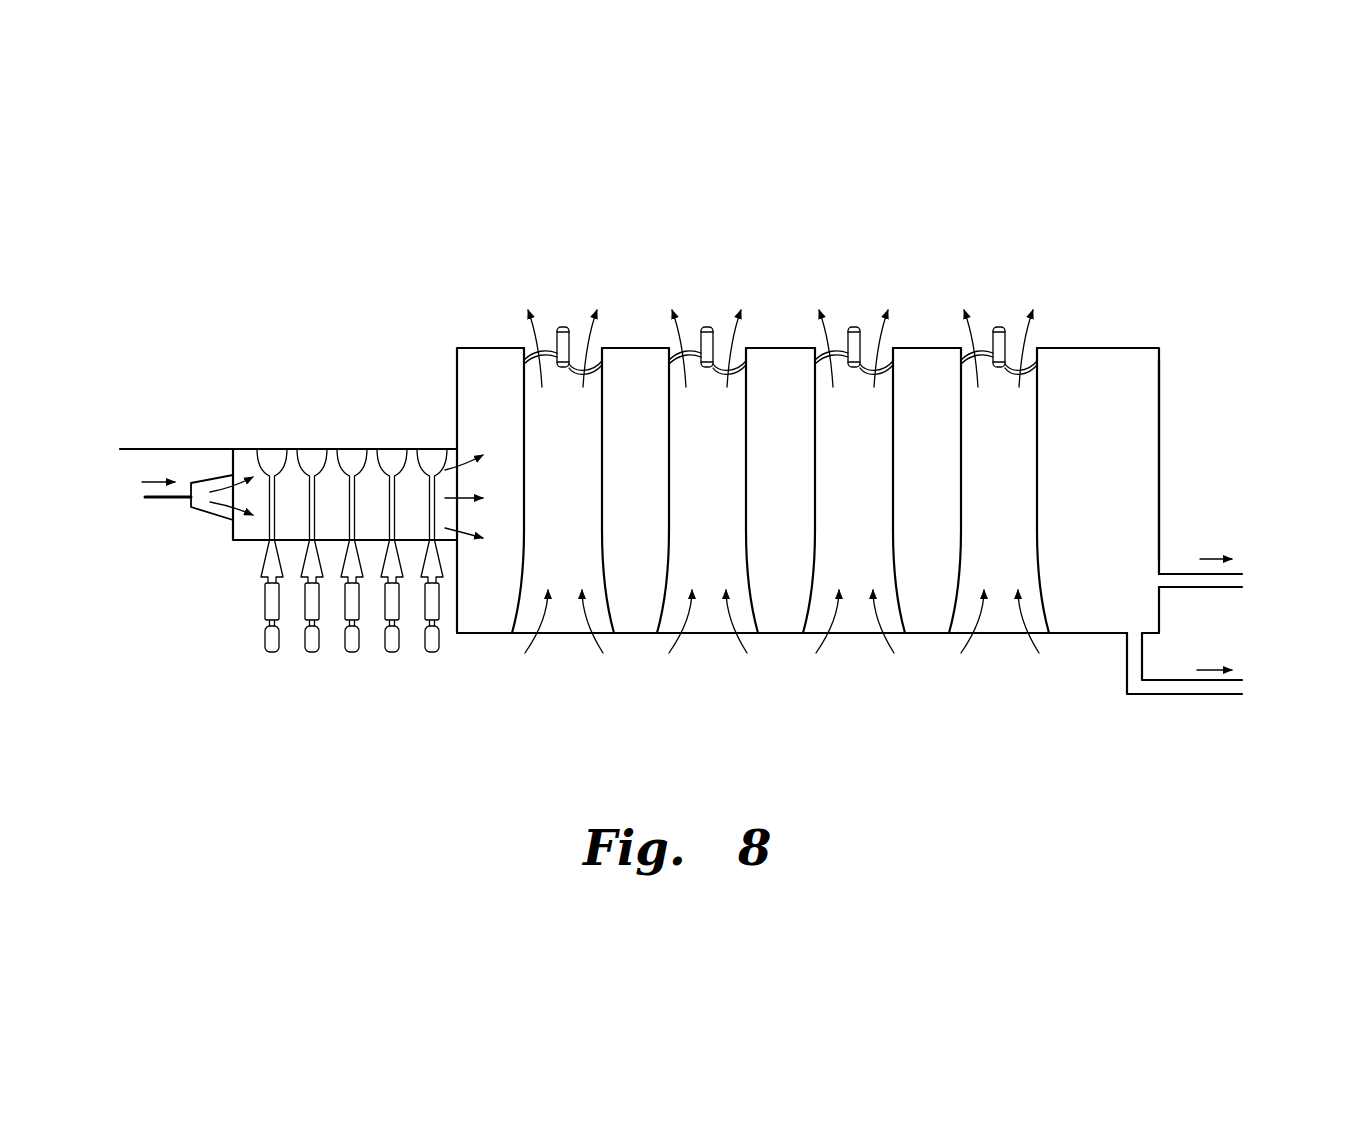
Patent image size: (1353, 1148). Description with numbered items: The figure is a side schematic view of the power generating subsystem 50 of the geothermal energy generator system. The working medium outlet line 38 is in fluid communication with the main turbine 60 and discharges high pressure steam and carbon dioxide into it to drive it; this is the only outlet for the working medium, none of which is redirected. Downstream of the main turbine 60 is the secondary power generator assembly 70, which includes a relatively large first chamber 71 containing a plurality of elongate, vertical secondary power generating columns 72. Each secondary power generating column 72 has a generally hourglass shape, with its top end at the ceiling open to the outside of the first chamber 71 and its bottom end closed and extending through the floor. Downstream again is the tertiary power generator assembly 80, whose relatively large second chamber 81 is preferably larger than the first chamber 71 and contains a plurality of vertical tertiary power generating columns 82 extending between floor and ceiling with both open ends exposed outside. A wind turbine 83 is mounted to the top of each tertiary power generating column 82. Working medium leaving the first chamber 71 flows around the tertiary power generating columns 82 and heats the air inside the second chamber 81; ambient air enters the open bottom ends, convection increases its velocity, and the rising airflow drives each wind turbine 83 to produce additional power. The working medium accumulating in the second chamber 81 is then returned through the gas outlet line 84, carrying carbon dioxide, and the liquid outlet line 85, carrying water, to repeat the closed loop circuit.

The working medium outlet line 38 is at (160, 503).
The power generating subsystem 50 is at (532, 208).
The main turbine 60 is at (203, 517).
The secondary power generator assembly 70 is at (228, 375).
The first chamber 71 is at (287, 449).
The secondary power generating columns 72 is at (348, 492).
The tertiary power generator assembly 80 is at (1118, 318).
The second chamber 81 is at (1159, 405).
The tertiary power generating columns 82 is at (522, 533).
The wind turbine 83 is at (565, 327).
The gas outlet line 84 is at (1181, 574).
The liquid outlet line 85 is at (1180, 695).